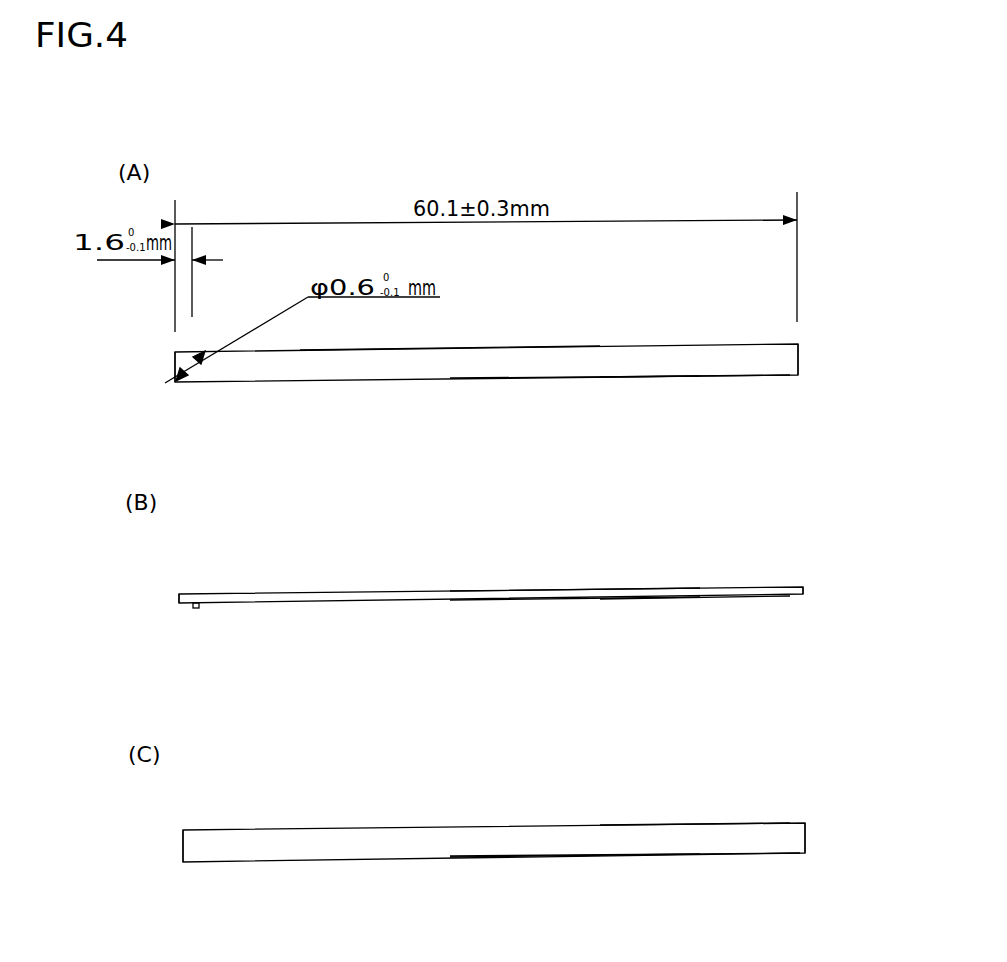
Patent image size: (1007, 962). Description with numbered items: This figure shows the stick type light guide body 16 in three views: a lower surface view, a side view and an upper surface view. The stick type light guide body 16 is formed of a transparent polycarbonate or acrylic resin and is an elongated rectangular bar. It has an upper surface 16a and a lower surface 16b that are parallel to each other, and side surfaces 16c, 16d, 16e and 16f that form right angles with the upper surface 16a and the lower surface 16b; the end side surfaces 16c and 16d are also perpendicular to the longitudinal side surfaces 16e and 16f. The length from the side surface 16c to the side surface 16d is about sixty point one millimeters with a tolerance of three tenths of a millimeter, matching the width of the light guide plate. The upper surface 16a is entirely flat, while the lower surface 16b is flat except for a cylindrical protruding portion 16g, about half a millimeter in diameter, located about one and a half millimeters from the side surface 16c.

The stick type light guide body 16 is at (445, 393).
The upper surface 16a is at (556, 588).
The lower surface 16b is at (555, 362).
The side surface 16c is at (175, 362).
The side surface 16d is at (798, 355).
The side surface 16e is at (482, 348).
The side surface 16f is at (667, 377).
The protruding portion 16g is at (193, 370).